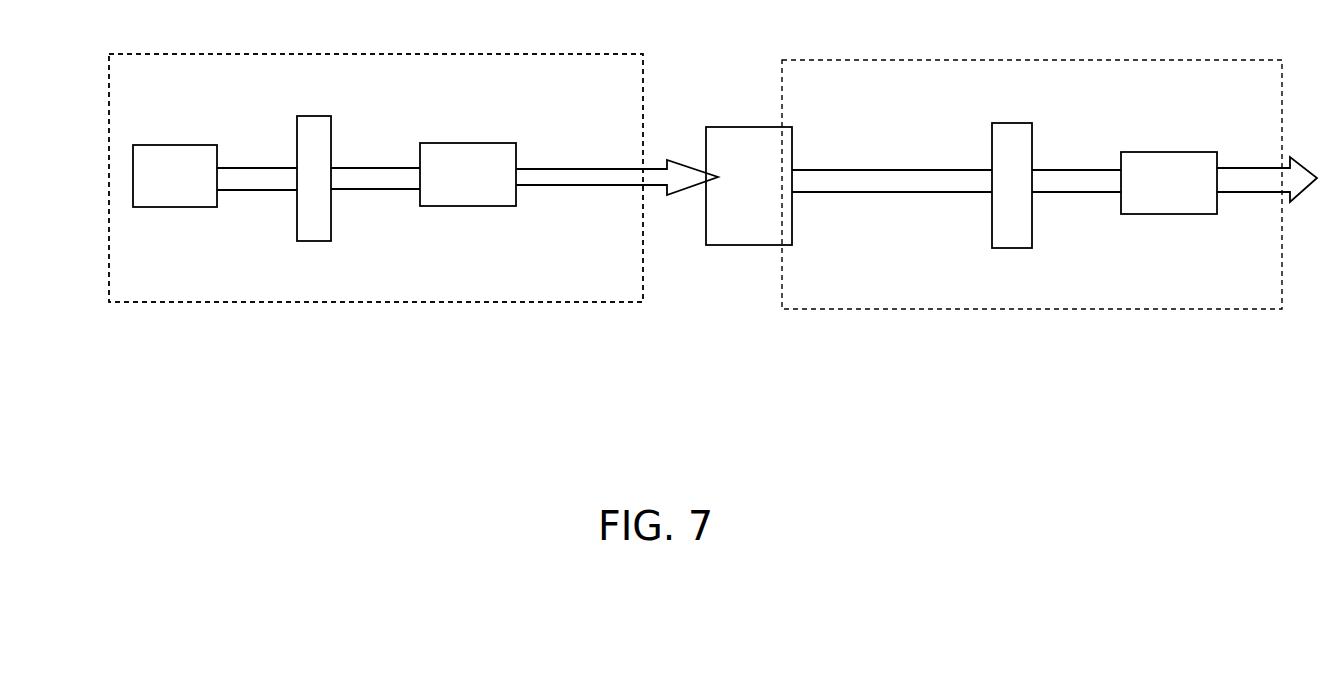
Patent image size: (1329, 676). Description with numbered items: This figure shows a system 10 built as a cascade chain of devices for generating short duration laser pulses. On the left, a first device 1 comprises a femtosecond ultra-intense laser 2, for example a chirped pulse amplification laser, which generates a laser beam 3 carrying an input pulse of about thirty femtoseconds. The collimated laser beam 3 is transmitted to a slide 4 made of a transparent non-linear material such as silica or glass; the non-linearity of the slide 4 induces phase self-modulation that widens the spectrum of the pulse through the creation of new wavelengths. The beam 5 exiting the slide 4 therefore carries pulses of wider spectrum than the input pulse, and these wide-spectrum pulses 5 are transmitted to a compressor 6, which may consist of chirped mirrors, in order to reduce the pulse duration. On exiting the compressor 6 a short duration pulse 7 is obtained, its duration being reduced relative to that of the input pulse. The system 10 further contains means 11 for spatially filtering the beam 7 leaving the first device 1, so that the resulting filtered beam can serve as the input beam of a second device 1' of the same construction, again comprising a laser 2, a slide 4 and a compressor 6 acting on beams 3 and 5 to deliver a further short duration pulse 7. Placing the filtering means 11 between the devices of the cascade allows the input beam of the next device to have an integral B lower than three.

The device for generating a short duration laser pulse 1 is at (376, 254).
The device for generating a short duration laser pulse 1' is at (1032, 259).
The femtosecond ultra-intense laser 2 is at (172, 168).
The laser beam 3 is at (260, 154).
The slide 4 is at (317, 128).
The beam exiting the slide 5 is at (381, 151).
The compressor 6 is at (455, 157).
The short duration pulse 7 is at (547, 200).
The system 10 is at (327, 463).
The means for spatial filtration 11 is at (750, 245).